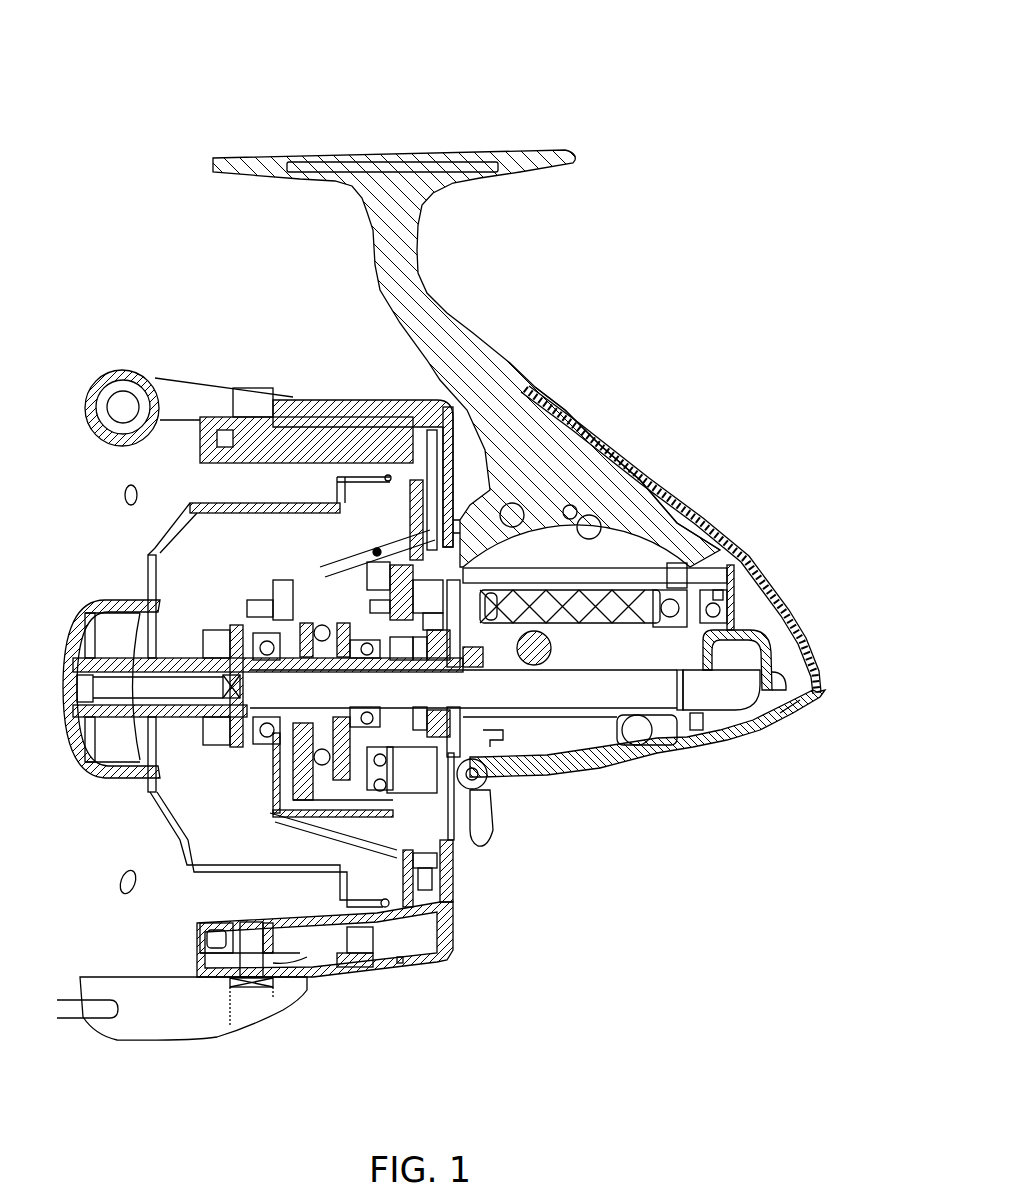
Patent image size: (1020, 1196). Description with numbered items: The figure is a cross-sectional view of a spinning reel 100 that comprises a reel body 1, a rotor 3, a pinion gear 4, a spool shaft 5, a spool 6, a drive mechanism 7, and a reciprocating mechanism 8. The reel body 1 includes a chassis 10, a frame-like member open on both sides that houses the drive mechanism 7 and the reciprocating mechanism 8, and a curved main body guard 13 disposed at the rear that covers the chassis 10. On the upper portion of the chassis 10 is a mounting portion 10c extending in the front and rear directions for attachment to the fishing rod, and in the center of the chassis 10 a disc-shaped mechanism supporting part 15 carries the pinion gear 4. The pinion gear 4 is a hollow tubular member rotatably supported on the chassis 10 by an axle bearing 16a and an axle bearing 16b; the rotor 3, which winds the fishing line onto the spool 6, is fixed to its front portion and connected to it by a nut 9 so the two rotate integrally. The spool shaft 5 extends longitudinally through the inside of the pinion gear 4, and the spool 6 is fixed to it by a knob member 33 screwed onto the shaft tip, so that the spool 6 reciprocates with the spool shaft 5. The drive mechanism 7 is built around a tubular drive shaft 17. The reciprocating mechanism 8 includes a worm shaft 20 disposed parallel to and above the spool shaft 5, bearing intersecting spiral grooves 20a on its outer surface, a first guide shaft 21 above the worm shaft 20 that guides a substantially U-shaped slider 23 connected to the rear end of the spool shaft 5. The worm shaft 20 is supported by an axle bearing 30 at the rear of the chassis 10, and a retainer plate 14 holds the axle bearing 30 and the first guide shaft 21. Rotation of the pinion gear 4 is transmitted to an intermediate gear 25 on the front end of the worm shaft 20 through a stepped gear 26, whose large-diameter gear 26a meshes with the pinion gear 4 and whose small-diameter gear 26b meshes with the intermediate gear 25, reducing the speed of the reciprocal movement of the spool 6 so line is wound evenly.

The spinning reel 100 is at (568, 110).
The reel body 1 is at (502, 318).
The chassis 10 is at (640, 777).
The mounting portion 10c is at (445, 150).
The main body guard 13 is at (618, 425).
The stepped gear 26 is at (399, 560).
The large-diameter gear 26a is at (522, 392).
The small-diameter gear 26b is at (360, 570).
The intermediate gear 25 is at (400, 557).
The first guide shaft 21 is at (690, 557).
The slider 23 is at (703, 548).
The retainer plate 14 is at (732, 607).
The knob member 33 is at (108, 588).
The nut 9 is at (265, 637).
The spool shaft 5 is at (273, 687).
The axle bearing 16a is at (355, 725).
The axle bearing 16b is at (478, 750).
The mechanism supporting part 15 is at (400, 768).
The spool 6 is at (204, 888).
The pinion gear 4 is at (453, 840).
The drive shaft 17 is at (605, 730).
The drive mechanism 7 is at (533, 720).
The reciprocating mechanism 8 is at (612, 755).
The worm shaft 20 is at (690, 743).
The intersecting spiral grooves 20a is at (737, 723).
The axle bearing 30 is at (780, 713).
The rotor 3 is at (352, 988).